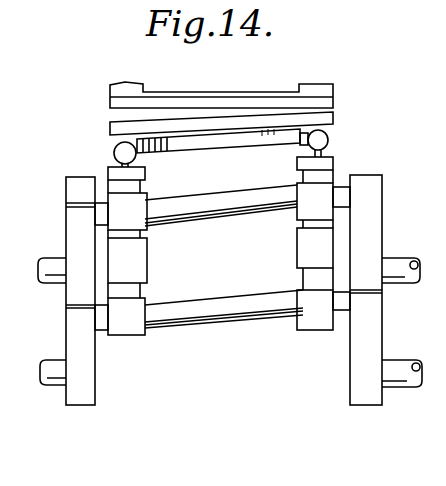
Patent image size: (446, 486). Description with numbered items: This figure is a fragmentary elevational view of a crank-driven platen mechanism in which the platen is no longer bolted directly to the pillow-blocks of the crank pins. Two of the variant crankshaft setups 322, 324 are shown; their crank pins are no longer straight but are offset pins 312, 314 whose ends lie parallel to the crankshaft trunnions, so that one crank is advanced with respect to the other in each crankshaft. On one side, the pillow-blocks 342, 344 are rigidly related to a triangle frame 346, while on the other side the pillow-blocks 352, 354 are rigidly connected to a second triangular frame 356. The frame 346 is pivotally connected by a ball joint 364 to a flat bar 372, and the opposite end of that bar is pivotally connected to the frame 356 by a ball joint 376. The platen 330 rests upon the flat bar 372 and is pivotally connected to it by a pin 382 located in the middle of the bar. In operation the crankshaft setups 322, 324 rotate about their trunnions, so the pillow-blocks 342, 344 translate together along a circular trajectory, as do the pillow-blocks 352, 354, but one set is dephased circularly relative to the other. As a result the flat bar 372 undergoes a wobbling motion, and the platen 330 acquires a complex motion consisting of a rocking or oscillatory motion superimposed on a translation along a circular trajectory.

The offset pin 312 is at (168, 215).
The offset pin 314 is at (165, 325).
The crankshaft setup 322 is at (55, 268).
The crankshaft setup 324 is at (55, 378).
The platen 330 is at (333, 118).
The pillow-block 342 is at (118, 210).
The pillow-block 344 is at (128, 334).
The triangle frame 346 is at (136, 268).
The pillow-block 352 is at (300, 212).
The pillow-block 354 is at (312, 322).
The second triangular frame 356 is at (300, 254).
The ball joint 364 is at (114, 150).
The flat bar 372 is at (278, 133).
The ball joint 376 is at (328, 138).
The pin 382 is at (231, 150).